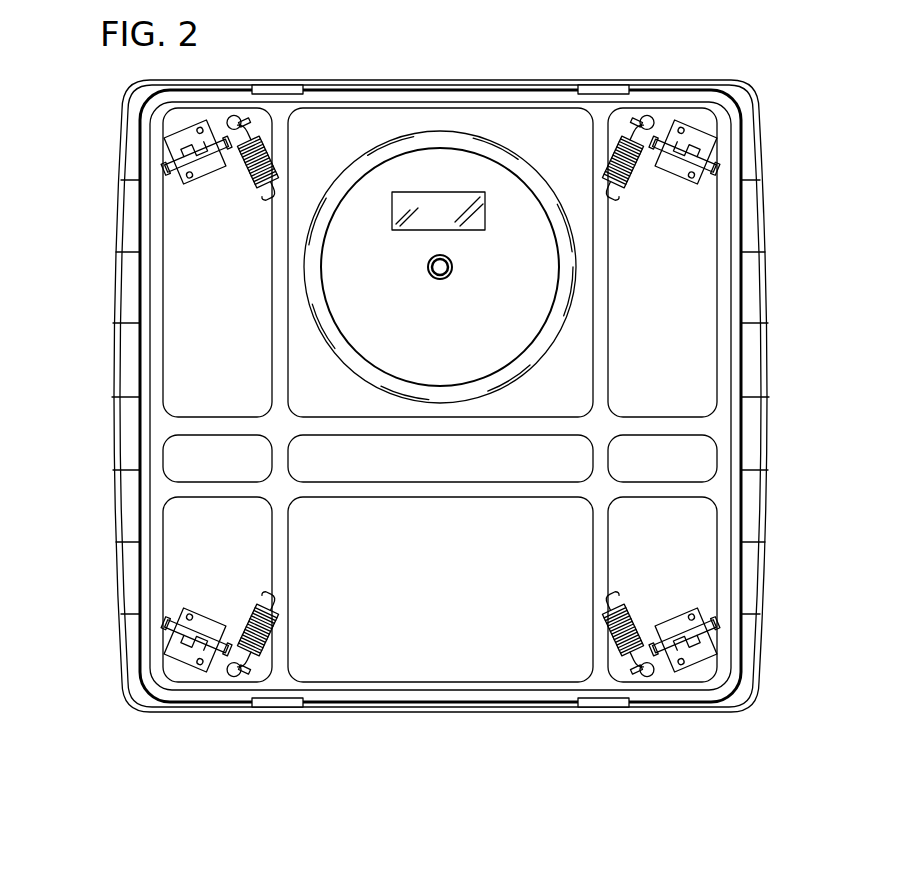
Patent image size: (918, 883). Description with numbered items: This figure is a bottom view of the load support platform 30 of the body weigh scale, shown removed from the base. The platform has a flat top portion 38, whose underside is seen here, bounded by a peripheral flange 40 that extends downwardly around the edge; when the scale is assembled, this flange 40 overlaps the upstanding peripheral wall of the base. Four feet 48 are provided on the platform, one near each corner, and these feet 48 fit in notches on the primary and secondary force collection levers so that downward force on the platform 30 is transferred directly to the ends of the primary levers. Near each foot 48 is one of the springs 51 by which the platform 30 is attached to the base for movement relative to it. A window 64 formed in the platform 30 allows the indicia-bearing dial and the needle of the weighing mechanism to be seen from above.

The load support platform 30 is at (586, 68).
The flat top portion 38 is at (427, 559).
The peripheral flange 40 is at (108, 452).
The feet 48 is at (207, 180).
The springs 51 is at (247, 173).
The window 64 is at (427, 334).